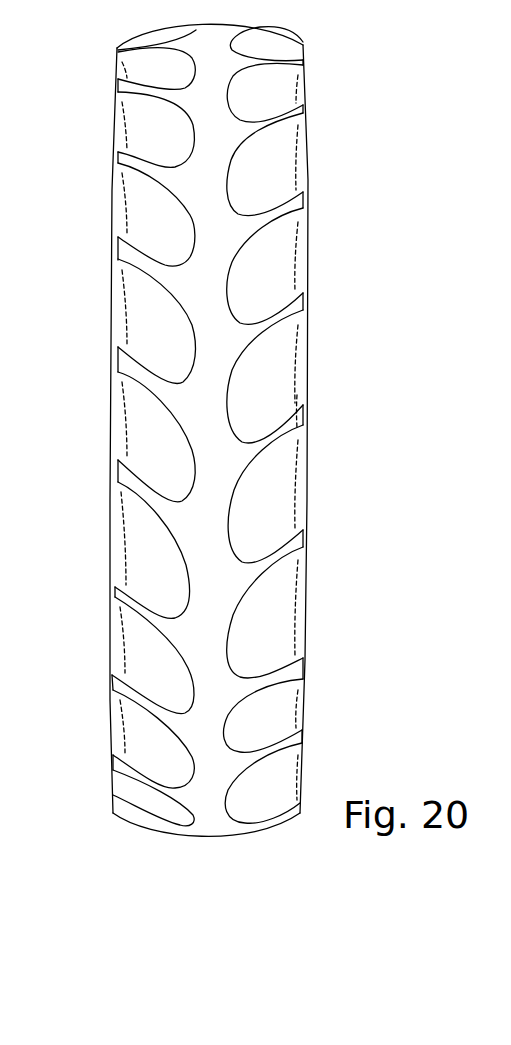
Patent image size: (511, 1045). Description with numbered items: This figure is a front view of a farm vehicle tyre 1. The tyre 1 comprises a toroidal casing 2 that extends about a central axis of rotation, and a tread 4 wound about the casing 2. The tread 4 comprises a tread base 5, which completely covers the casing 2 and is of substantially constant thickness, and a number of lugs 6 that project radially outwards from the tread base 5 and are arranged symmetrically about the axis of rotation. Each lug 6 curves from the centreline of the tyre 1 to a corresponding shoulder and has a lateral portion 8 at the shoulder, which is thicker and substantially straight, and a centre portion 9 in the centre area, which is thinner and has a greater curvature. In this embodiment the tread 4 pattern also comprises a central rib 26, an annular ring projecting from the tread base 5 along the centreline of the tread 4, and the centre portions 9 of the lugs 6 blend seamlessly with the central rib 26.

The tyre 1 is at (433, 74).
The toroidal casing 2 is at (363, 605).
The tread 4 is at (76, 204).
The tread base 5 is at (267, 265).
The lug 6 is at (293, 462).
The lateral portion 8 is at (300, 417).
The centre portion 9 is at (243, 455).
The central rib 26 is at (207, 523).